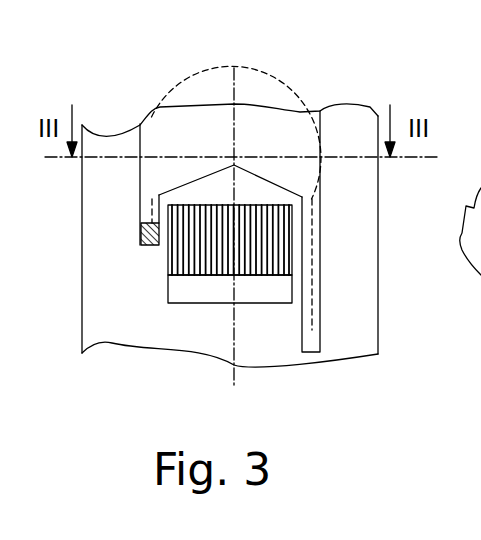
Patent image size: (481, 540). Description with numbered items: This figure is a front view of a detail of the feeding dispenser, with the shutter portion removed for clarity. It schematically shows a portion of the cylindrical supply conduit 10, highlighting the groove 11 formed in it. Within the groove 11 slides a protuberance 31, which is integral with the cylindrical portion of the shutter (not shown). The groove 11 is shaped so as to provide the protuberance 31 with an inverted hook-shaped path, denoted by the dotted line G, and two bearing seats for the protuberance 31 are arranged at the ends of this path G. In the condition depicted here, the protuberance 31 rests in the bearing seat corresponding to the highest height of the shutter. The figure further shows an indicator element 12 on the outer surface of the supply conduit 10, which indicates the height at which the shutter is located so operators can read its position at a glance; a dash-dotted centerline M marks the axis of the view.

The cylindrical supply conduit 10 is at (128, 318).
The groove 11 is at (288, 118).
The indicator element 12 is at (270, 241).
The protuberance 31 is at (140, 237).
The inverted hook-shaped path G is at (176, 139).
The center axis / middle plane M is at (233, 88).